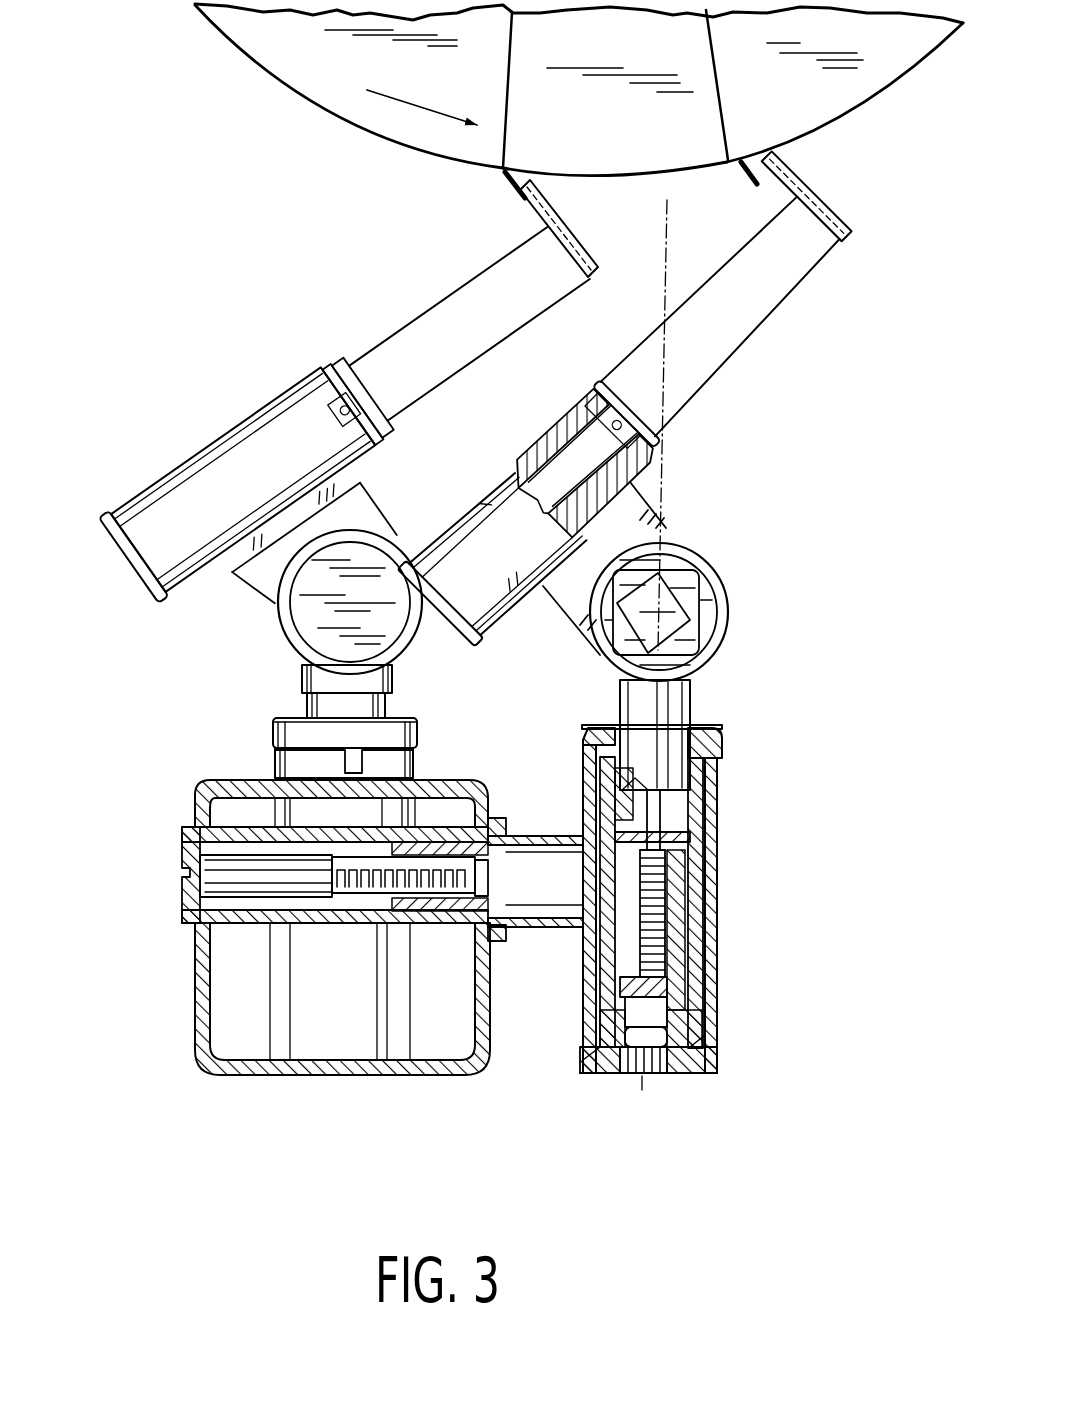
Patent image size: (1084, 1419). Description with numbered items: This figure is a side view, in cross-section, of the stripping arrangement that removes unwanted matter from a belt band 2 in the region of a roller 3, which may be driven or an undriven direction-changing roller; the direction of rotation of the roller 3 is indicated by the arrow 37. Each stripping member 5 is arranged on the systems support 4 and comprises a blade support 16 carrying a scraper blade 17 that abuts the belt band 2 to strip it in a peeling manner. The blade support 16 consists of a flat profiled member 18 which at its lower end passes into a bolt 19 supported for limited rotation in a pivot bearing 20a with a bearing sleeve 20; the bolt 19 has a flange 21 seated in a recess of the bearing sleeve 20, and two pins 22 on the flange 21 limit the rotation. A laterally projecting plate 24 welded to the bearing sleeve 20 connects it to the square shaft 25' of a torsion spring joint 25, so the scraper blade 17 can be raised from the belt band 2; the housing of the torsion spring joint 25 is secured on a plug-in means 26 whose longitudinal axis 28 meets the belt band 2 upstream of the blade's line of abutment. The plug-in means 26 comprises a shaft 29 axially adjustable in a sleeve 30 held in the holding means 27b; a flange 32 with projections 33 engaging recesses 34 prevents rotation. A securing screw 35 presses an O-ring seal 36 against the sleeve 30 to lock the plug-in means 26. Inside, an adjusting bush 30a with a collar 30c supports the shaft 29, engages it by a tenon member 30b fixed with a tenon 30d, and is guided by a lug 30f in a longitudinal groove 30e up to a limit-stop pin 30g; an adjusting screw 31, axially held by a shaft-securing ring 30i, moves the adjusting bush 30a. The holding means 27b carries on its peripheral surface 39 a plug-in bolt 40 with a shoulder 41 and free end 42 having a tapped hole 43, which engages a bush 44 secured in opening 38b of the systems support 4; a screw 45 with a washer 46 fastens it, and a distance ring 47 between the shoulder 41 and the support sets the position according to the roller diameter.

The belt band 2 is at (905, 78).
The roller 3 is at (293, 47).
The flow direction arrow 37 is at (367, 90).
The blade support 16 is at (443, 297).
The scraper blade 17 is at (820, 232).
The flat profiled member 18 is at (788, 267).
The stripping member 5 is at (303, 360).
The pivot bearing 20a is at (250, 400).
The bearing sleeve 20 is at (545, 430).
The longitudinal axis 28 is at (668, 250).
The pins 22 is at (662, 412).
The flange 21 is at (653, 457).
The bolt 19 is at (590, 466).
The laterally projecting plate 24 is at (633, 533).
The shaft 25' is at (737, 605).
The torsion spring joint 25 is at (722, 612).
The shaft 29 is at (690, 680).
The plug-in means 26 is at (700, 713).
The flange 32 is at (708, 746).
The projections 33 is at (717, 762).
The sleeve 30 is at (717, 797).
The tenon 30d is at (712, 841).
The tenon member 30b is at (715, 860).
The adjusting screw 31 is at (715, 897).
The pin 30g is at (717, 928).
The adjusting bush 30a is at (718, 934).
The longitudinal groove 30e is at (718, 941).
The lug 30f is at (718, 950).
The collar 30c is at (620, 985).
The shaft-securing ring 30i is at (625, 1035).
The peripheral surface 39 is at (578, 1040).
The holding means 27b is at (572, 1072).
The securing screw 35 is at (680, 1078).
The O-ring seal 36 is at (718, 1060).
The shoulder 41 is at (492, 958).
The distance ring 47 is at (500, 823).
The plug-in bolt 40 is at (547, 827).
The recesses 34 is at (347, 765).
The systems support 4 is at (243, 780).
The bush 44 is at (240, 830).
The washer 46 is at (257, 878).
The screw 45 is at (200, 953).
The free end 42 is at (395, 920).
The tapped hole 43 is at (365, 925).
The opening 38b is at (445, 915).